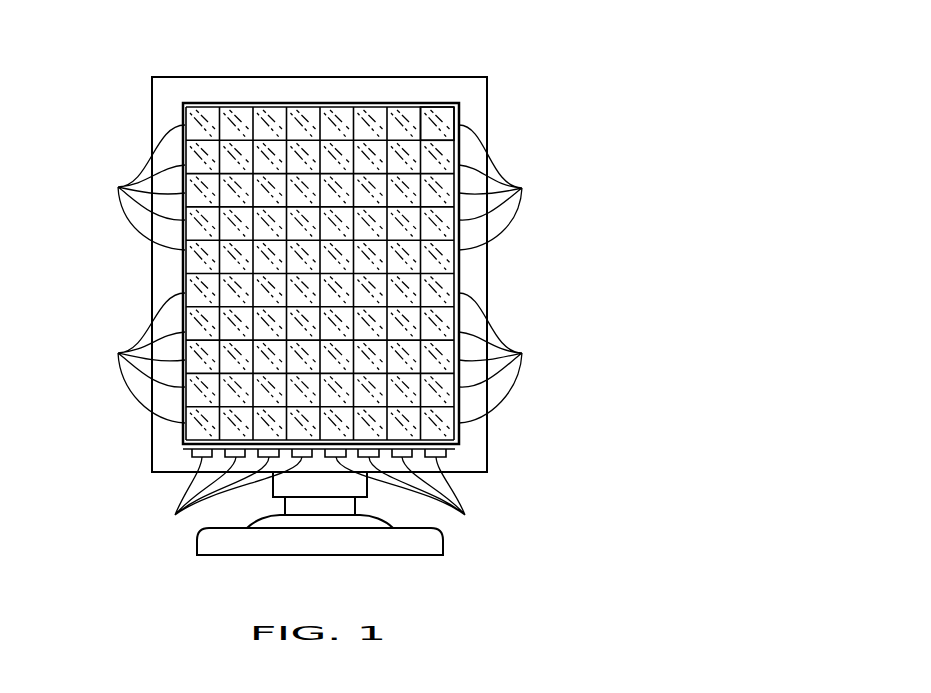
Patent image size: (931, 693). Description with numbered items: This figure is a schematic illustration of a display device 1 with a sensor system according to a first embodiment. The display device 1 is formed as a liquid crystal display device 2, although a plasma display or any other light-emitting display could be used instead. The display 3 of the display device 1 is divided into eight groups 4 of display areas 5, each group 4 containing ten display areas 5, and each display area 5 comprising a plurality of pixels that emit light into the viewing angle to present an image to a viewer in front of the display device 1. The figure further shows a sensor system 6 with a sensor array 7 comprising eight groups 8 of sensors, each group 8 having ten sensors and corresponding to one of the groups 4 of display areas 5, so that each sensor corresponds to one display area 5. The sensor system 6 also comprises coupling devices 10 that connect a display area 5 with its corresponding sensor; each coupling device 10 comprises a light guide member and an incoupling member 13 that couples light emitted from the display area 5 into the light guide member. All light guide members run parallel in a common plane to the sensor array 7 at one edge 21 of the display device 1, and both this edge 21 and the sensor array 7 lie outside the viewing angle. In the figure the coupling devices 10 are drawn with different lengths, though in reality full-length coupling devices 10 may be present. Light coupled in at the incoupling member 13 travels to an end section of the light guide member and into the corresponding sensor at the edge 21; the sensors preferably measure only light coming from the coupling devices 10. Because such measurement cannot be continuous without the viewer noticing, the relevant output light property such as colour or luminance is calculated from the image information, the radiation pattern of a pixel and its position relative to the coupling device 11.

The display device 1 is at (390, 301).
The liquid crystal display device 2 is at (533, 105).
The display 3 is at (192, 113).
The groups of display areas 4 is at (210, 80).
The display area 5 is at (145, 274).
The sensor system 6 is at (395, 455).
The sensor array 7 is at (477, 452).
The groups of sensors 8 is at (319, 500).
The coupling device 10 is at (518, 274).
The coupling device 11 is at (518, 274).
The incoupling member 13 is at (442, 127).
The edge 21 is at (163, 452).